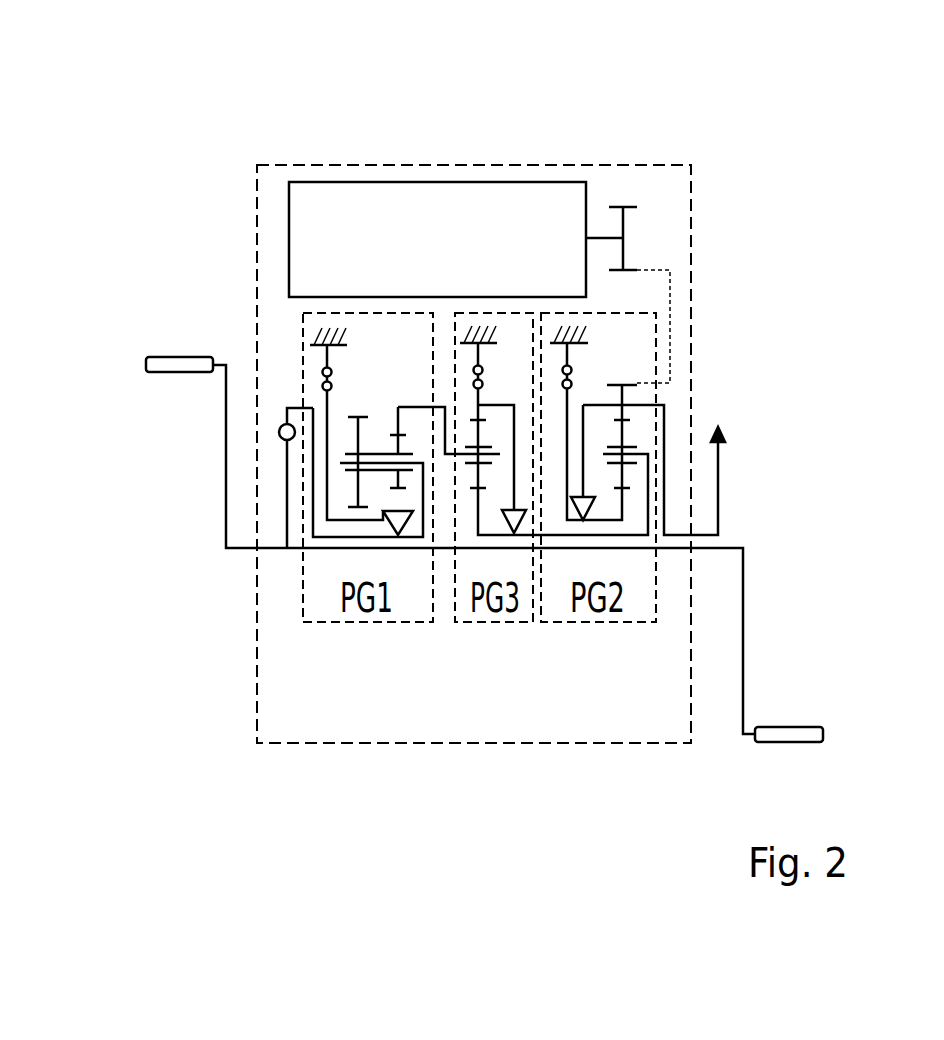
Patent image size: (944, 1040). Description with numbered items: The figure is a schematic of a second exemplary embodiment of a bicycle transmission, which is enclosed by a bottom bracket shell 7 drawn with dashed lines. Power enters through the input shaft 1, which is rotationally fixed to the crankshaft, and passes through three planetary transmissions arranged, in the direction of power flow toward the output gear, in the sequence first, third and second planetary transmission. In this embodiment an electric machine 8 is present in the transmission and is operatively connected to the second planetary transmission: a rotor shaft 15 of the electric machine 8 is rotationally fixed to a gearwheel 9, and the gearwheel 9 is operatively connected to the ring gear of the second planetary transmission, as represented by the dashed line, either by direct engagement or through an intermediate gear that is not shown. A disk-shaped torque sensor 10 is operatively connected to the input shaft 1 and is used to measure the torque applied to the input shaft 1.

The input shaft 1 is at (287, 494).
The bottom bracket shell 7 is at (255, 646).
The electric machine 8 is at (339, 212).
The gearwheel 9 is at (625, 223).
The disk-shaped torque sensor 10 is at (278, 432).
The rotor shaft 15 is at (599, 236).